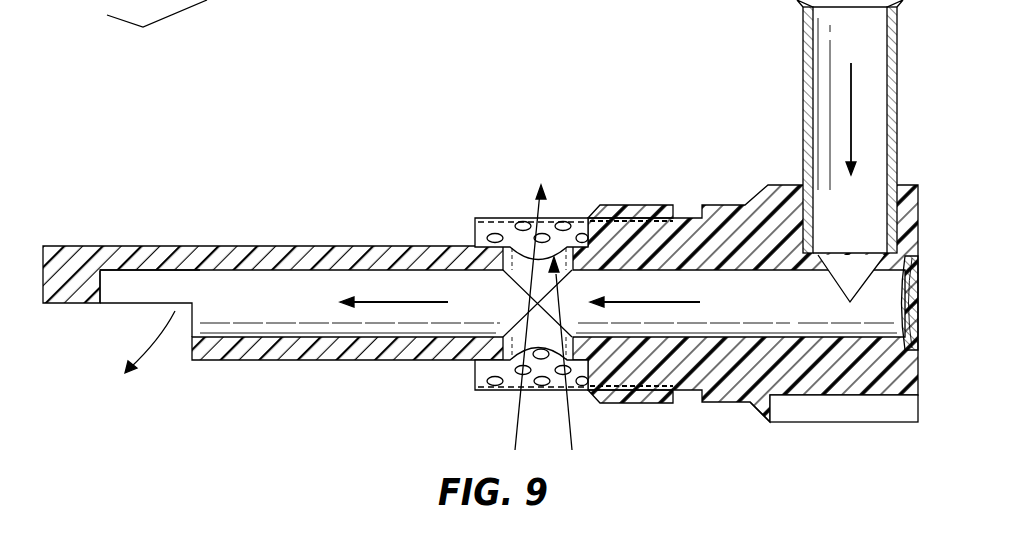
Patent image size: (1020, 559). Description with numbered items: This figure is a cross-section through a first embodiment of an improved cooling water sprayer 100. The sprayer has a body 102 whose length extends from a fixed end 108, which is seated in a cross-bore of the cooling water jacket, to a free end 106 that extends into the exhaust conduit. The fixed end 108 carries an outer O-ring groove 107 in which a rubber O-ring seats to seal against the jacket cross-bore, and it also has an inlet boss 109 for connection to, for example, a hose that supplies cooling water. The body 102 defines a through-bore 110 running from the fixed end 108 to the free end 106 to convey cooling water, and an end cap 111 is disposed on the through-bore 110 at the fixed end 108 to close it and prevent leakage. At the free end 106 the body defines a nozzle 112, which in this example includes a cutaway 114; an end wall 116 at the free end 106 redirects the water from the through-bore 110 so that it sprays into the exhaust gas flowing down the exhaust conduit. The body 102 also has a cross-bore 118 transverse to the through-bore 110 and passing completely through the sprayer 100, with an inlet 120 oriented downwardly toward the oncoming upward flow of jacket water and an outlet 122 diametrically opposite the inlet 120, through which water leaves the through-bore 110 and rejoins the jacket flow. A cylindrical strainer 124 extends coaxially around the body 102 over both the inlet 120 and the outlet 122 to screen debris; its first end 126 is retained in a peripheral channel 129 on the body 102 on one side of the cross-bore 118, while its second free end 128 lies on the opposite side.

The cooling water sprayer 100 is at (354, 146).
The body 102 is at (752, 392).
The free end 106 is at (55, 229).
The outer O-ring groove 107 is at (683, 217).
The fixed end 108 is at (819, 434).
The inlet boss 109 is at (786, 15).
The through-bore 110 is at (292, 311).
The end cap 111 is at (920, 318).
The nozzle 112 is at (125, 305).
The cutaway 114 is at (99, 316).
The end wall 116 is at (103, 287).
The cross-bore 118 is at (532, 302).
The inlet 120 is at (512, 343).
The outlet 122 is at (517, 220).
The strainer 124 is at (573, 220).
The first end 126 is at (633, 210).
The second free end 128 is at (482, 218).
The peripheral channel 129 is at (657, 220).